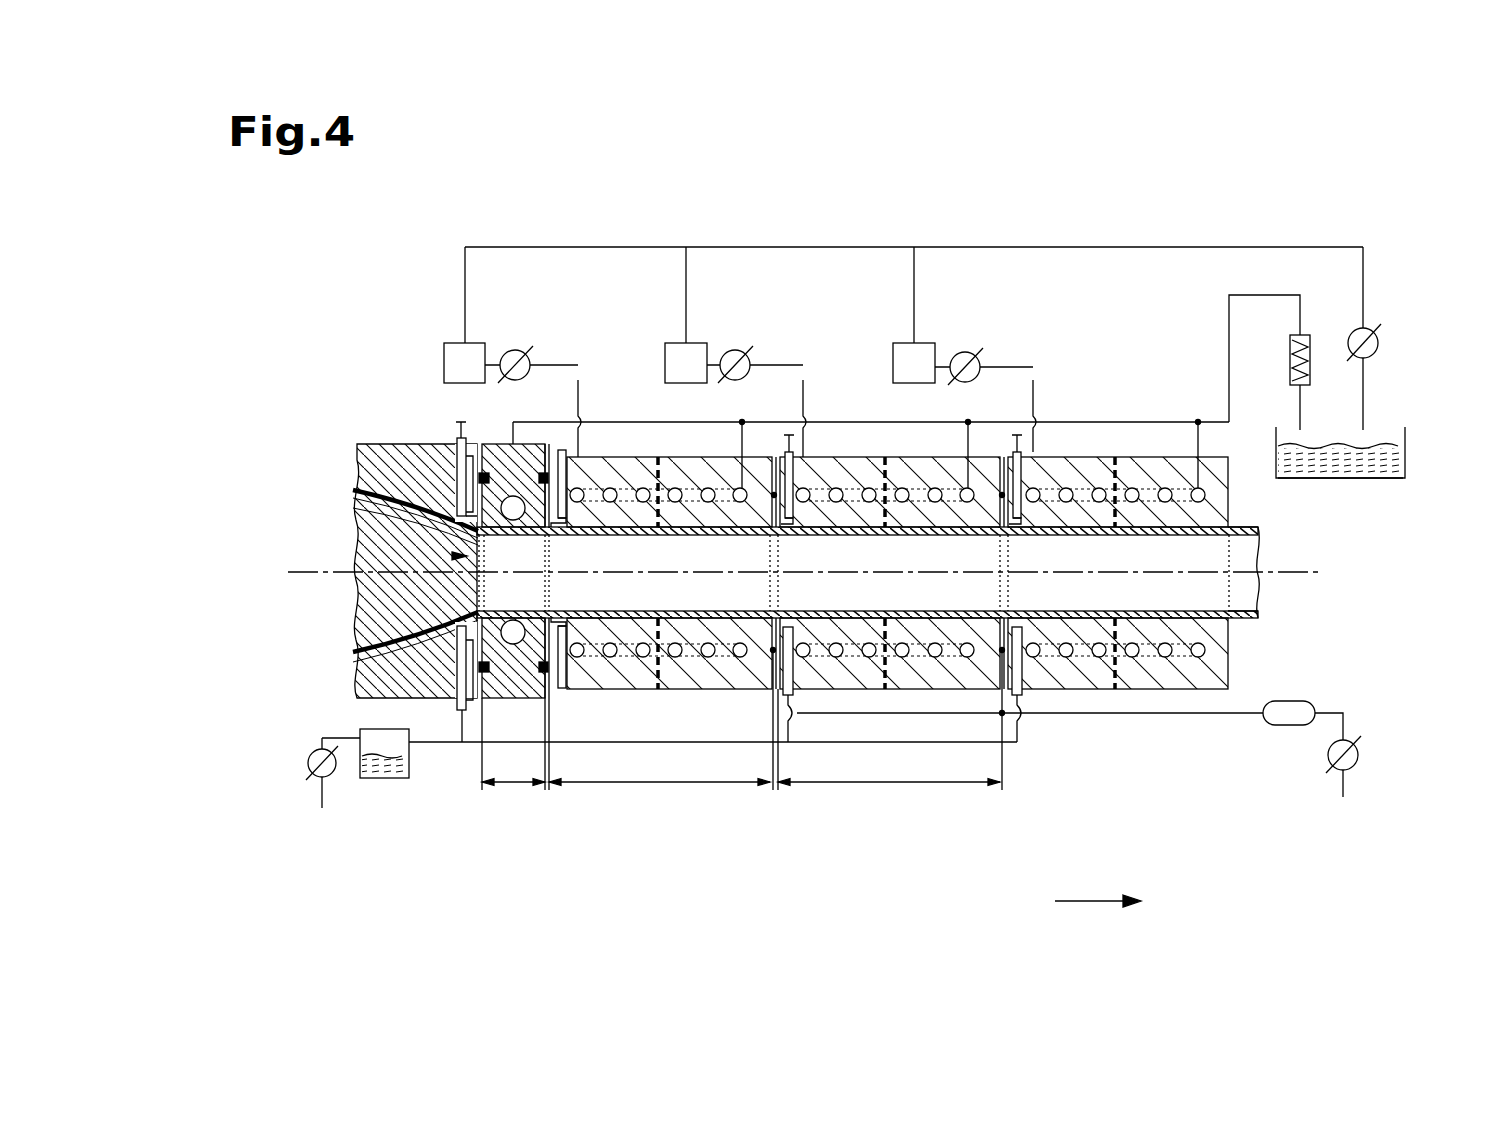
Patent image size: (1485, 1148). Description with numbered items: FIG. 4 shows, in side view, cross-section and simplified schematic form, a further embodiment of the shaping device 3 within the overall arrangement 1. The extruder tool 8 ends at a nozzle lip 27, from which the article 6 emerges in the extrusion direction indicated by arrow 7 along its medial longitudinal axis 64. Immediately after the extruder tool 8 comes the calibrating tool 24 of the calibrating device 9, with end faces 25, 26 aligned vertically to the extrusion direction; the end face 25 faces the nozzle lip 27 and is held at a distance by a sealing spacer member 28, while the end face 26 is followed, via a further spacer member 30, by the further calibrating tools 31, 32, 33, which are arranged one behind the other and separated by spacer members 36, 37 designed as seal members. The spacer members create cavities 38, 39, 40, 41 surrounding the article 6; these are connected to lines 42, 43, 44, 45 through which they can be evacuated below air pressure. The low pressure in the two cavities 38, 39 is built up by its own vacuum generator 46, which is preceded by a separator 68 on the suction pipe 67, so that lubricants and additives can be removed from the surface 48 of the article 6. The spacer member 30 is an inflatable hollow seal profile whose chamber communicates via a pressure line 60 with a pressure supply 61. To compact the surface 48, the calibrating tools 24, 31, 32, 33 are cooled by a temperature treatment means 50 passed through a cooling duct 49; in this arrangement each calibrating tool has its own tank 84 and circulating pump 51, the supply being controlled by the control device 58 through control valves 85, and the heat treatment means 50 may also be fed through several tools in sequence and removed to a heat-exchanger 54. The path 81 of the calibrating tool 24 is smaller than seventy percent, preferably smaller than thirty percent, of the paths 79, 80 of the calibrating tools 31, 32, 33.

The extrusion apparatus 1 is at (337, 285).
The heating device 3 is at (1270, 200).
The article 6 is at (1237, 590).
The extrusion direction arrow 7 is at (1090, 898).
The extruder tool 8 is at (415, 668).
The calibrating device 9 is at (1118, 217).
The calibrating tool 24 is at (485, 700).
The end face 25 is at (472, 436).
The end face 26 is at (560, 458).
The nozzle lip 27 is at (452, 556).
The spacer member 28 is at (372, 698).
The spacer member 30 is at (556, 692).
The calibrating tool 31 is at (592, 470).
The calibrating tool 32 is at (855, 470).
The calibrating tool 33 is at (1080, 450).
The spacer member 36 is at (773, 655).
The spacer member 37 is at (1002, 655).
The cavity 38 is at (357, 526).
The cavity 39 is at (357, 484).
The cavity 40 is at (782, 445).
The cavity 41 is at (1013, 445).
The line 42 is at (456, 446).
The line 43 is at (566, 460).
The line 44 is at (818, 472).
The line 45 is at (1033, 452).
The vacuum generator 46 is at (330, 775).
The surface 48 is at (1238, 525).
The cooling duct 49 is at (512, 642).
The temperature treatment means 50 is at (1372, 445).
The circulating pump 51 is at (1378, 332).
The heat-exchanger 54 is at (1290, 355).
The control device 58 is at (460, 364).
The pressure line 60 is at (1098, 716).
The pressure supply 61 is at (1324, 764).
The medial longitudinal axis 64 is at (1318, 578).
The suction pipe 67 is at (668, 744).
The separator 68 is at (380, 745).
The path 79 is at (632, 786).
The path 80 is at (877, 786).
The path 81 is at (537, 786).
The tank 84 is at (1322, 482).
The control valve 85 is at (514, 350).